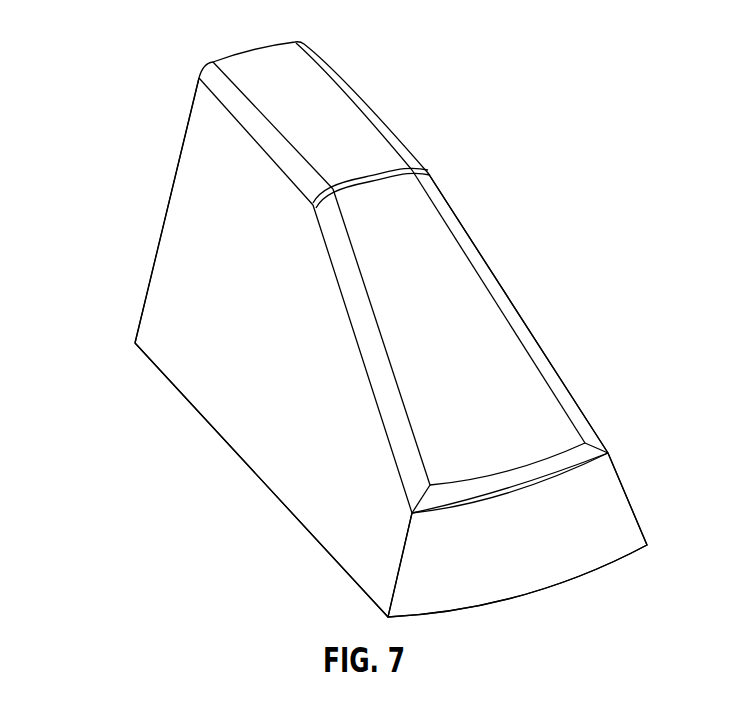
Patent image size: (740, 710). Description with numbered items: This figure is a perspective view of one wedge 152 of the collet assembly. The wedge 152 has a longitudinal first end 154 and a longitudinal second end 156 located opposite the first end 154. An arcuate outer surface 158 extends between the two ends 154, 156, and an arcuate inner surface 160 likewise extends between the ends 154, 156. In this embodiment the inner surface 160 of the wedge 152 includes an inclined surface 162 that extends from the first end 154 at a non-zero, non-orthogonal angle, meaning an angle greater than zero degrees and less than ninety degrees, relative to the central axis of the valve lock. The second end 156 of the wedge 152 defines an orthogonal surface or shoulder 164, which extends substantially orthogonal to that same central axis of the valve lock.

The wedge 152 is at (106, 41).
The longitudinal first end 154 is at (615, 512).
The longitudinal second end 156 is at (183, 135).
The arcuate outer surface 158 is at (210, 432).
The arcuate inner surface 160 is at (352, 118).
The inclined surface 162 is at (483, 308).
The shoulder 164 is at (180, 202).